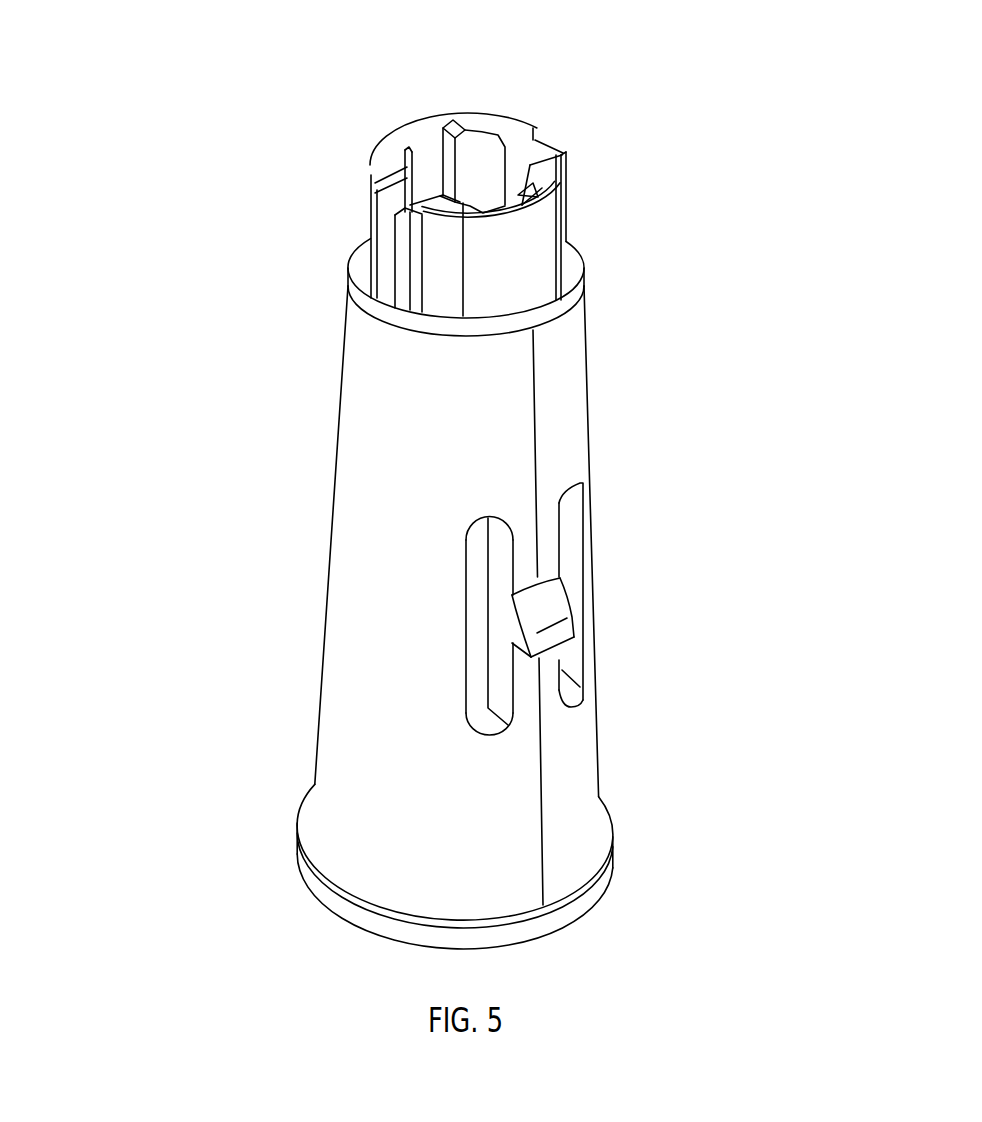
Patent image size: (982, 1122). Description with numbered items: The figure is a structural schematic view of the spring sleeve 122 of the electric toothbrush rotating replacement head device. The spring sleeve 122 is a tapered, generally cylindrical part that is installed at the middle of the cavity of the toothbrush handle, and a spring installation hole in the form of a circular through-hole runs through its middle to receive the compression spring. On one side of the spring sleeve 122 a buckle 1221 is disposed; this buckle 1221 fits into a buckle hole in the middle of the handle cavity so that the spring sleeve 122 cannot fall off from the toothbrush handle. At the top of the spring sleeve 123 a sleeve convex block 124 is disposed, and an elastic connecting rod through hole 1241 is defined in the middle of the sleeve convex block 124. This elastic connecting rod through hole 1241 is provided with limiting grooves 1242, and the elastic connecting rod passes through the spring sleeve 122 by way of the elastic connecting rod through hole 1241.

The spring sleeve 122 is at (357, 457).
The buckle 1221 is at (557, 633).
The top of the spring sleeve 123 is at (562, 298).
The sleeve convex block 124 is at (372, 220).
The elastic connecting rod through hole 1241 is at (438, 157).
The limiting groove 1242 is at (535, 148).